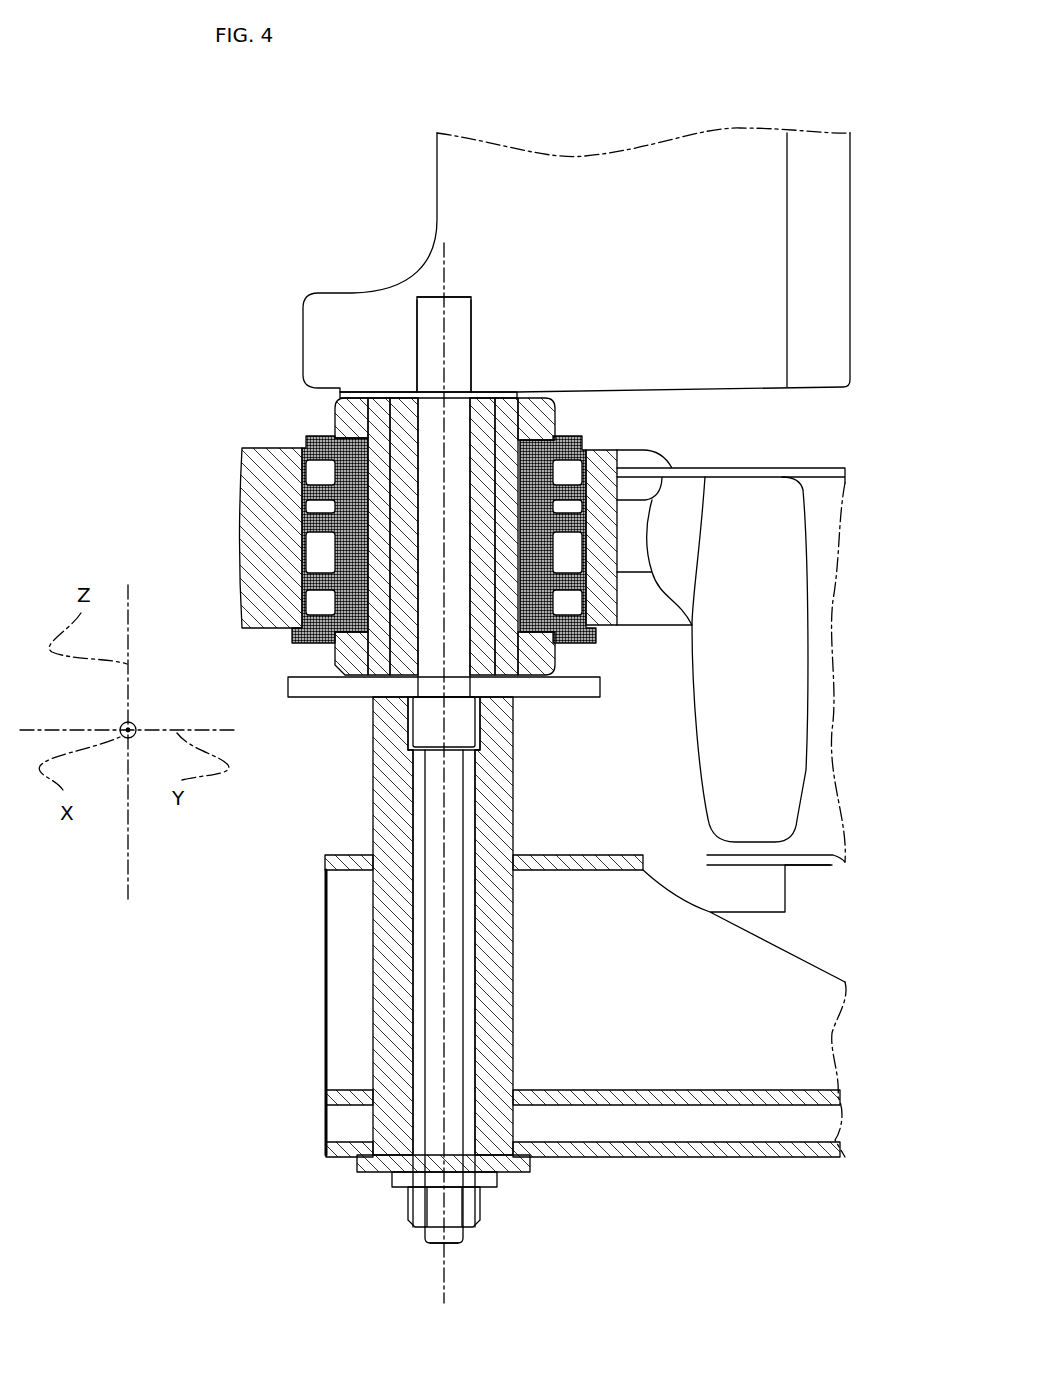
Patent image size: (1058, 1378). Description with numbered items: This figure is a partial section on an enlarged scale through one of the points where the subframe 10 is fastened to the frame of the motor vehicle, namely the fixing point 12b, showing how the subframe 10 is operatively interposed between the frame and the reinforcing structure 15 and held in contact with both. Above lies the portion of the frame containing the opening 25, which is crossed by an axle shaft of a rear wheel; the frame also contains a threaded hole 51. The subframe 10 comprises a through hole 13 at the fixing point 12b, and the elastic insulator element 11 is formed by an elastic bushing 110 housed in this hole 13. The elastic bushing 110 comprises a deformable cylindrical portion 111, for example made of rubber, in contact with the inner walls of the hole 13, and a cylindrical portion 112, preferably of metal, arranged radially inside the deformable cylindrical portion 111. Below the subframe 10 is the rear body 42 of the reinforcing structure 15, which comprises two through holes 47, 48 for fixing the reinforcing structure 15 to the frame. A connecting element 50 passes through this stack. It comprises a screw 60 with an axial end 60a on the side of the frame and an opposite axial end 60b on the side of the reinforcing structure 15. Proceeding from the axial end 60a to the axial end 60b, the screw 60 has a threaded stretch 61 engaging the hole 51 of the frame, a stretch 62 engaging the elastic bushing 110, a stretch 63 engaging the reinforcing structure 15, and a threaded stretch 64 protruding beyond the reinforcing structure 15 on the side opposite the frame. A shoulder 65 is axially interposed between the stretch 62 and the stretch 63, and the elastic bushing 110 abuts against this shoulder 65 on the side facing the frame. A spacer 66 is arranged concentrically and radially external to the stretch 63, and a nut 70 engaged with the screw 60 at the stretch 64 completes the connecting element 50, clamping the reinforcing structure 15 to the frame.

The subframe 10 is at (776, 707).
The elastic insulator element 11 is at (371, 540).
The elastic bushing 110 is at (371, 540).
The deformable cylindrical portion 111 is at (300, 644).
The cylindrical portion 112 is at (405, 658).
The fixing point 12b is at (250, 276).
The through hole 13 is at (318, 561).
The reinforcing structure 15 is at (803, 1072).
The opening 25 is at (765, 262).
The rear body 42 is at (693, 1150).
The through hole 47 is at (512, 1033).
The through hole 48 is at (512, 1033).
The connecting element 50 is at (413, 744).
The hole 51 is at (461, 373).
The screw 60 is at (415, 744).
The axial end 60a is at (478, 277).
The axial end 60b is at (495, 1250).
The stretch 61 is at (437, 317).
The stretch 62 is at (430, 422).
The stretch 63 is at (455, 1014).
The stretch 64 is at (435, 1233).
The shoulder 65 is at (300, 687).
The spacer 66 is at (387, 828).
The nut 70 is at (415, 1209).